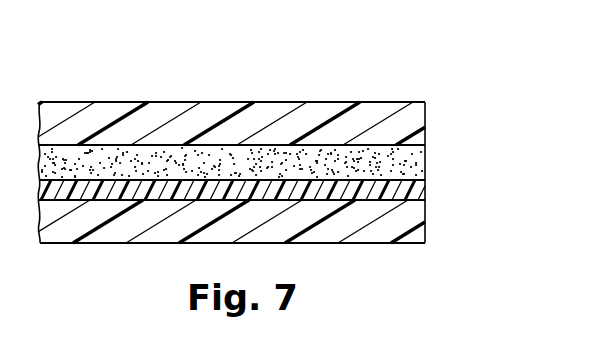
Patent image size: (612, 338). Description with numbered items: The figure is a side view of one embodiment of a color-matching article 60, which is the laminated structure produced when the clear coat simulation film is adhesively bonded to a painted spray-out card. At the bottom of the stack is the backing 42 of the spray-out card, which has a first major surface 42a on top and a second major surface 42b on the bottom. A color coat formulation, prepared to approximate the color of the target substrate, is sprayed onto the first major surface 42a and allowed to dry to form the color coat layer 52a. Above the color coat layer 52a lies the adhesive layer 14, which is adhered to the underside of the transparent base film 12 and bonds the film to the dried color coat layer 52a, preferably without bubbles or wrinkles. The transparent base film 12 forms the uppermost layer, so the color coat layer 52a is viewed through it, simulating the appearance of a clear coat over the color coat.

The color-matching article 60 is at (290, 62).
The transparent base film 12 is at (418, 110).
The adhesive layer 14 is at (423, 158).
The first major surface 42a is at (420, 187).
The backing 42 is at (415, 215).
The second major surface 42b is at (387, 243).
The color coat layer 52a is at (95, 193).